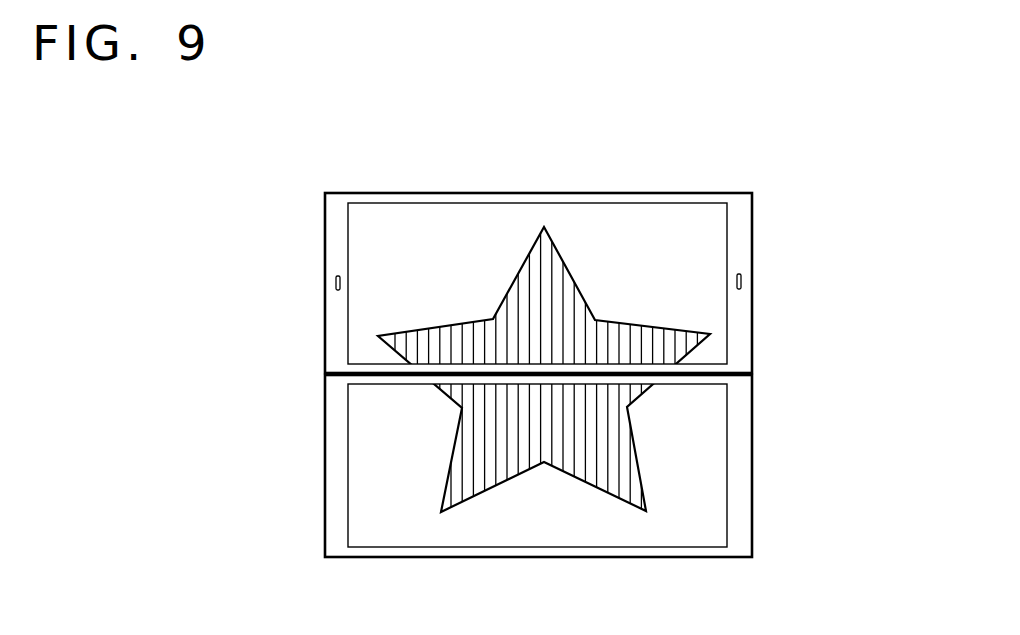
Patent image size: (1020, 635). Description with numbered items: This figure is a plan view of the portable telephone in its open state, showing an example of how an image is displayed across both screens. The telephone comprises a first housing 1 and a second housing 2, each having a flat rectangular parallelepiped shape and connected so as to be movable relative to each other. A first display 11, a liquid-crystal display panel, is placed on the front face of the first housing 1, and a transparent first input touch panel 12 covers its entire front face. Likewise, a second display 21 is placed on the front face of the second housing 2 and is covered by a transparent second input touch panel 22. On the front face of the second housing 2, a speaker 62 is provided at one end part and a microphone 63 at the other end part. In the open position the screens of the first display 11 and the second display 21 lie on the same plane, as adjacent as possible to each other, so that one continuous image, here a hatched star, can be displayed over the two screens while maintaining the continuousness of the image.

The first housing 1 is at (752, 455).
The second housing 2 is at (752, 263).
The first display 11 is at (615, 393).
The first input touch panel 12 is at (715, 418).
The second display 21 is at (614, 351).
The second input touch panel 22 is at (713, 225).
The speaker 62 is at (336, 283).
The microphone 63 is at (741, 283).